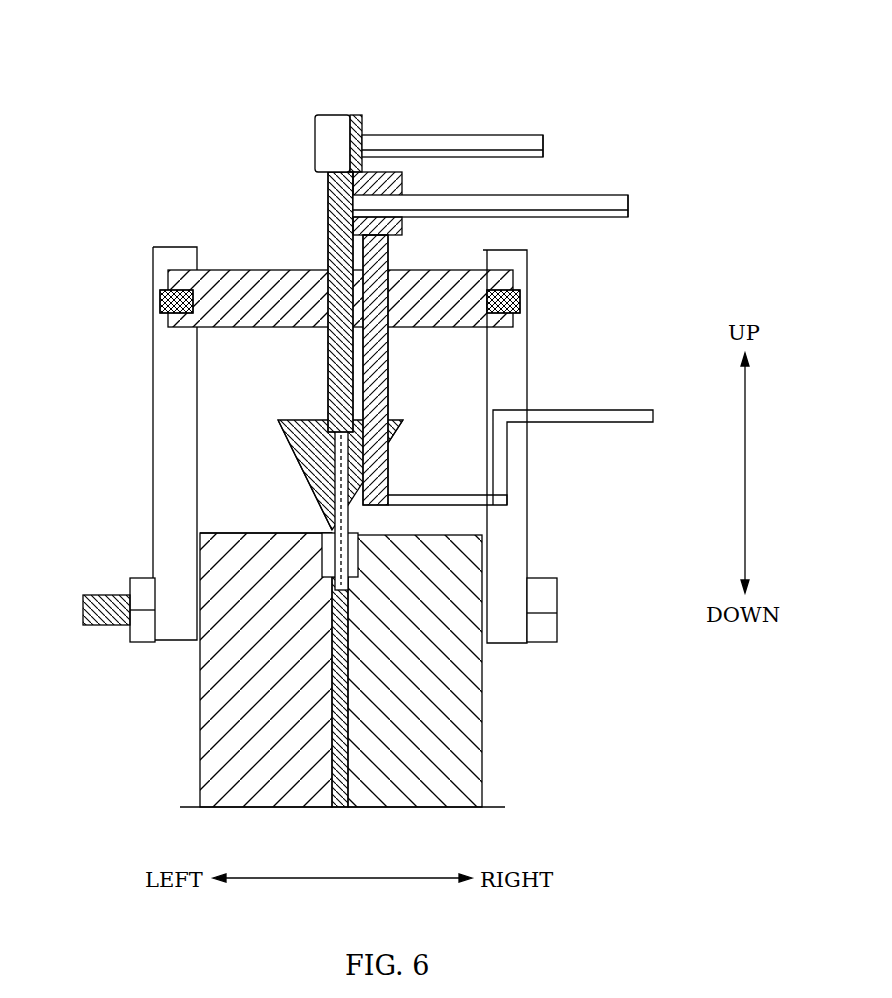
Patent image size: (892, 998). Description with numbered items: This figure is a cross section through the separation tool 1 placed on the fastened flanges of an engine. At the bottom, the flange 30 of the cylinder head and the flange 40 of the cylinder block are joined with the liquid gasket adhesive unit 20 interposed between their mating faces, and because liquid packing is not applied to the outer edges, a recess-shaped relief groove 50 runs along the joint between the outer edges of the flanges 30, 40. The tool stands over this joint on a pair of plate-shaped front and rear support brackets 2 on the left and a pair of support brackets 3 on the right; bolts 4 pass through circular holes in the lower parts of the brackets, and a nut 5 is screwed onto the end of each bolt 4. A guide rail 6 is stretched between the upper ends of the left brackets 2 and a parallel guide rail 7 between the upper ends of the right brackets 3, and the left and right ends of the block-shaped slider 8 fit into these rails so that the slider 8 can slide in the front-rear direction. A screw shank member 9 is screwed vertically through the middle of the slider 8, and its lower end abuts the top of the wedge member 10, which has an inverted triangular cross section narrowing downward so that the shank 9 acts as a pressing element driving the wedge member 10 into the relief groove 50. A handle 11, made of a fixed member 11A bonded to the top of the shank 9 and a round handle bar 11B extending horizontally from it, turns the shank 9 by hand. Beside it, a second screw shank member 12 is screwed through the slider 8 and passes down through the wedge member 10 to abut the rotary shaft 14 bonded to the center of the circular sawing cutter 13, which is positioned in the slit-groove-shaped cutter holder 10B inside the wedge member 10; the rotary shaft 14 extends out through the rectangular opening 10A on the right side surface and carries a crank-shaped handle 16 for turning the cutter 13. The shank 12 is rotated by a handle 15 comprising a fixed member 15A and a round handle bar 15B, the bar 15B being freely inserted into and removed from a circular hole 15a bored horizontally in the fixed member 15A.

The separation tool 1 is at (229, 115).
The front and rear support brackets 2 is at (153, 455).
The front and rear support brackets 3 is at (522, 523).
The bolts 4 is at (530, 605).
The nut 5 is at (142, 578).
The guide rail 6 is at (160, 297).
The guide rail 7 is at (528, 300).
The slider 8 is at (262, 270).
The screw shank member 9 is at (327, 373).
The wedge member 10 is at (283, 420).
The opening 10A is at (359, 515).
The cutter holder 10B is at (303, 462).
The handle 11 is at (467, 132).
The fixed member 11A is at (322, 153).
The handle bar 11B is at (538, 135).
The screw shank member 12 is at (390, 383).
The sawing cutter 13 is at (324, 527).
The rotary shaft 14 is at (439, 495).
The handle 15 is at (563, 195).
The circular hole 15a is at (393, 203).
The fixed member 15A is at (403, 222).
The handle bar 15B is at (595, 195).
The handle 16 is at (615, 410).
The liquid gasket adhesive unit 20 is at (328, 810).
The flange 30 is at (202, 740).
The flange 40 is at (482, 745).
The relief groove 50 is at (262, 531).